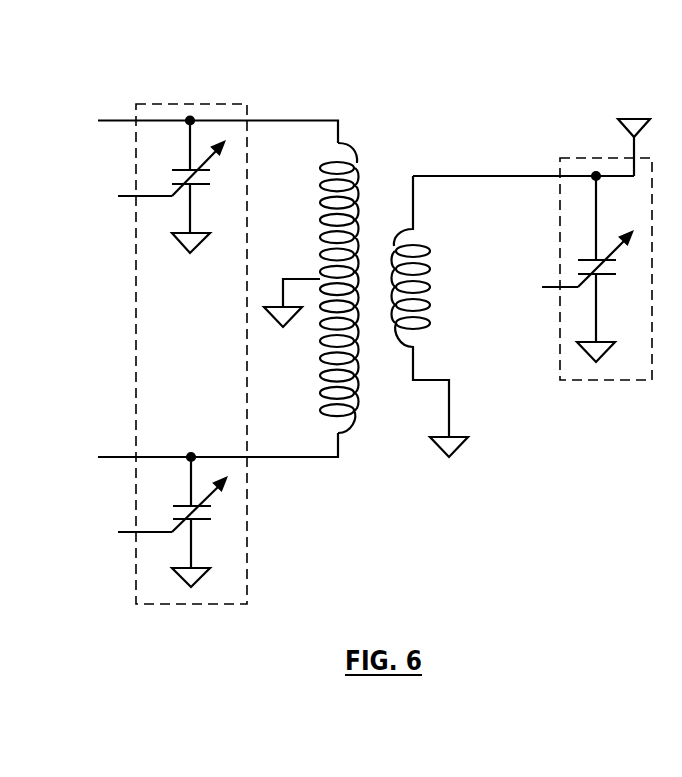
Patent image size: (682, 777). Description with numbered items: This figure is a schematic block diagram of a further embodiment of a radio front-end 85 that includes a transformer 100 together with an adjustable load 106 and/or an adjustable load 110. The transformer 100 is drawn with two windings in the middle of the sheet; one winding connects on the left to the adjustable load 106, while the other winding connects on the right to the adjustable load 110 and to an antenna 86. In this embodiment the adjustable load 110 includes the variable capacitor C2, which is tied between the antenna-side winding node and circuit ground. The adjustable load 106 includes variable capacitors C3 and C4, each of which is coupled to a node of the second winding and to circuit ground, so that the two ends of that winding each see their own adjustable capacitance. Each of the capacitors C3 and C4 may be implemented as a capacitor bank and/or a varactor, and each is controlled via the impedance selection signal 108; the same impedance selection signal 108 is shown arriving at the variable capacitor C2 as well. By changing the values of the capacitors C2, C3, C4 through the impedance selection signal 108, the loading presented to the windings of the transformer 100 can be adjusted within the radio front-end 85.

The radio front-end 85 is at (342, 364).
The antenna 86 is at (634, 132).
The transformer 100 is at (366, 328).
The adjustable load 106 is at (163, 312).
The impedance selection signal 108 is at (305, 365).
The adjustable load 110 is at (578, 310).
The variable capacitor C2 is at (607, 267).
The variable capacitor C3 is at (202, 185).
The variable capacitor C4 is at (202, 520).